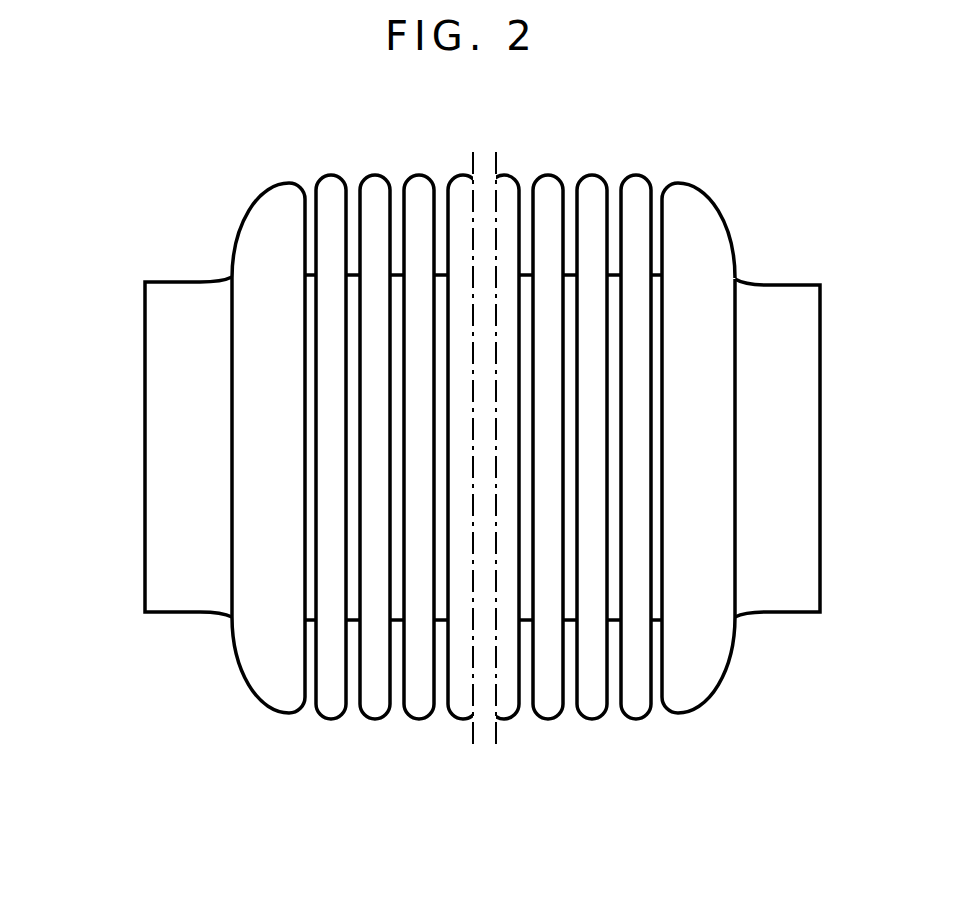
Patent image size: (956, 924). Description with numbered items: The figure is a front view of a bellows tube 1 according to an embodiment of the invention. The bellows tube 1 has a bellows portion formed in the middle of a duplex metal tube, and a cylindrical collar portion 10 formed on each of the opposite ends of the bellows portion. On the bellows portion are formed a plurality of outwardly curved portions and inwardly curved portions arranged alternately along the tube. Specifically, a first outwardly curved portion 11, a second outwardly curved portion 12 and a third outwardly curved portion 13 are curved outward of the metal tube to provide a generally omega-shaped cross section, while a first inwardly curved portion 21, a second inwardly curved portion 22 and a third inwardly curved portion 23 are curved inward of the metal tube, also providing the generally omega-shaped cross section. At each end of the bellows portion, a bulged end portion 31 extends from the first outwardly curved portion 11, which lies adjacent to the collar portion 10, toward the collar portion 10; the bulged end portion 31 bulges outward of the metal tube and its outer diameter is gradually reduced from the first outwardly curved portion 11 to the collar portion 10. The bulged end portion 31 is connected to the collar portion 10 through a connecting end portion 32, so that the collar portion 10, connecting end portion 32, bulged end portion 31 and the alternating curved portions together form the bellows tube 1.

The bellows tube 1 is at (215, 666).
The collar portion 10 is at (177, 297).
The first outwardly curved portion 11 is at (289, 178).
The second outwardly curved portion 12 is at (332, 176).
The third outwardly curved portion 13 is at (376, 176).
The first inwardly curved portion 21 is at (311, 623).
The second inwardly curved portion 22 is at (353, 621).
The third inwardly curved portion 23 is at (397, 622).
The bulged end portion 31 is at (248, 218).
The connecting end portion 32 is at (227, 277).